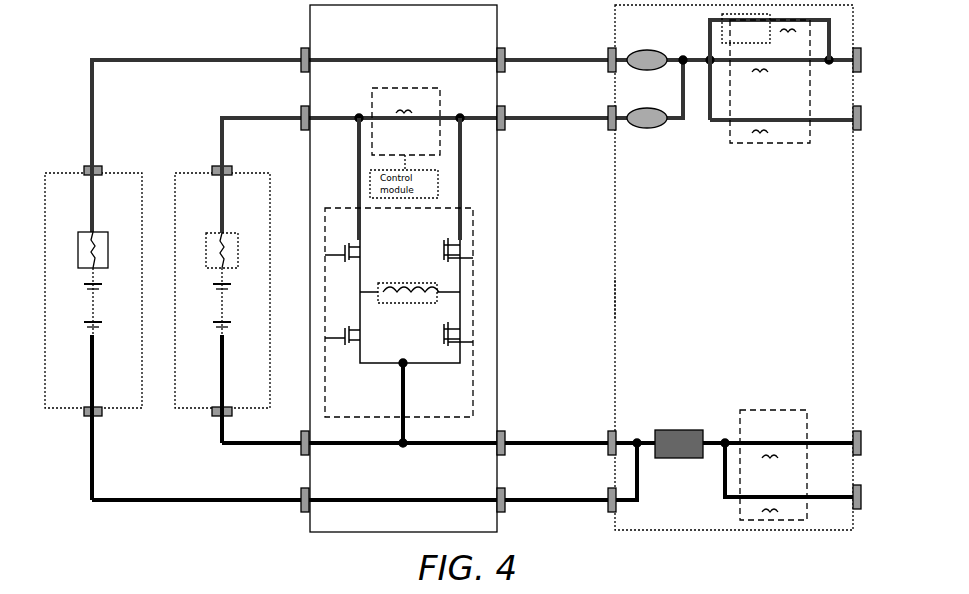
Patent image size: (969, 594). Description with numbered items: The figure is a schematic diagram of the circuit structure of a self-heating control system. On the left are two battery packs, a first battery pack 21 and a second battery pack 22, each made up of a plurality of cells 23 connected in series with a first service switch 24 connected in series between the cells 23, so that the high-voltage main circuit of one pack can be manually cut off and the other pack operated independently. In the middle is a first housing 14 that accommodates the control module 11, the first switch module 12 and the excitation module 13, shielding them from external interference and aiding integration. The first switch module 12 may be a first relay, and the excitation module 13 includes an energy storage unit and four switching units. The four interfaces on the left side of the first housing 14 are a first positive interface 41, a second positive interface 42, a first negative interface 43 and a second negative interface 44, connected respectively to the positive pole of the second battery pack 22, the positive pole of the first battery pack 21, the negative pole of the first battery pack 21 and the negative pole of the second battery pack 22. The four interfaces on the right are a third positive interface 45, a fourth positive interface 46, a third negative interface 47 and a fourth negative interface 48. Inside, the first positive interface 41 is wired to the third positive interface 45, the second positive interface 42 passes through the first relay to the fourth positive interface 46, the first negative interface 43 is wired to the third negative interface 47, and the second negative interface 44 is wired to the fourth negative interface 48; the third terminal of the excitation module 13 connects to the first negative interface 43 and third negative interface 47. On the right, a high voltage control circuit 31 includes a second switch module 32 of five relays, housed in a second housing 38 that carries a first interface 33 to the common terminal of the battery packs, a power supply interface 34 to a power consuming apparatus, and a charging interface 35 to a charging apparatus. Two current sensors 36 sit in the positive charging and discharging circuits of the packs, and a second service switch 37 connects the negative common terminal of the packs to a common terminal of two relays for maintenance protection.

The control module 11 is at (359, 184).
The first switch module 12 is at (372, 98).
The excitation module 13 is at (335, 208).
The first housing 14 is at (497, 290).
The first battery pack 21 is at (252, 173).
The second battery pack 22 is at (125, 173).
The cell 23 is at (102, 322).
The first service switch 24 is at (108, 245).
The high voltage control circuit 31 is at (615, 256).
The second switch module 32 is at (768, 143).
The first interface 33 is at (608, 117).
The power supply interface 34 is at (861, 65).
The charging interface 35 is at (861, 130).
The current sensor 36 is at (652, 128).
The second service switch 37 is at (668, 430).
The second housing 38 is at (615, 310).
The first positive interface 41 is at (301, 56).
The second positive interface 42 is at (301, 115).
The first negative interface 43 is at (301, 440).
The second negative interface 44 is at (301, 496).
The third positive interface 45 is at (505, 70).
The fourth positive interface 46 is at (505, 130).
The third negative interface 47 is at (505, 455).
The fourth negative interface 48 is at (505, 508).